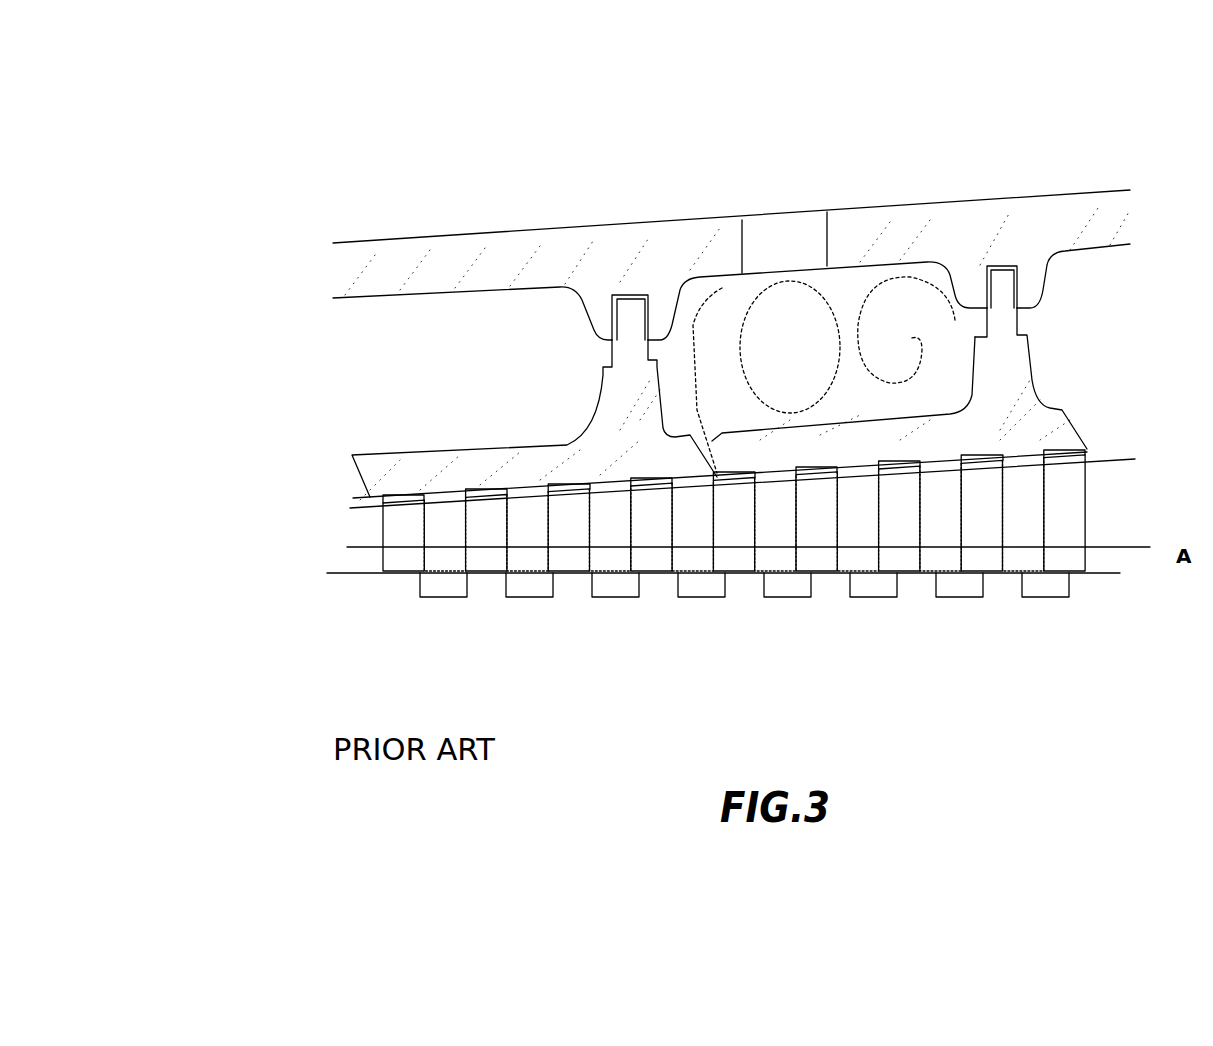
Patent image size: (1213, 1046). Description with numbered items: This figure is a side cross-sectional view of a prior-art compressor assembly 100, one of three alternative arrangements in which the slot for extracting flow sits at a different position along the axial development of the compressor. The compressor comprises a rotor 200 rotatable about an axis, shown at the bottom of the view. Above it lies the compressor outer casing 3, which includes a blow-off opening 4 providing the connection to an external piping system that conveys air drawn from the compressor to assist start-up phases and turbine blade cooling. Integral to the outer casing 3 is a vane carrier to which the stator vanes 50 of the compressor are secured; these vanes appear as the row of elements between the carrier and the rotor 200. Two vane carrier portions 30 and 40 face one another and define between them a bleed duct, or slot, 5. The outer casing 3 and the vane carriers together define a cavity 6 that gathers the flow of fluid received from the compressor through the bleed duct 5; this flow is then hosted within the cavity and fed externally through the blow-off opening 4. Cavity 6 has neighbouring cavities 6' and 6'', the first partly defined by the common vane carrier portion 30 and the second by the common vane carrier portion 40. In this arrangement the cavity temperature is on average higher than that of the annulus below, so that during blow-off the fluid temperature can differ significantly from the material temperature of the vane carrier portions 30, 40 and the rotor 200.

The compressor assembly 100 is at (313, 181).
The compressor outer casing 3 is at (493, 247).
The blow-off opening 4 is at (793, 205).
The cavity 6 is at (817, 367).
The neighbouring cavity 6' is at (472, 317).
The neighbouring cavity 6'' is at (1073, 276).
The vane carrier portion 30 is at (610, 435).
The vane carrier portion 40 is at (990, 368).
The bleed duct 5 is at (728, 484).
The stator vanes 50 is at (568, 537).
The rotor 200 is at (372, 598).